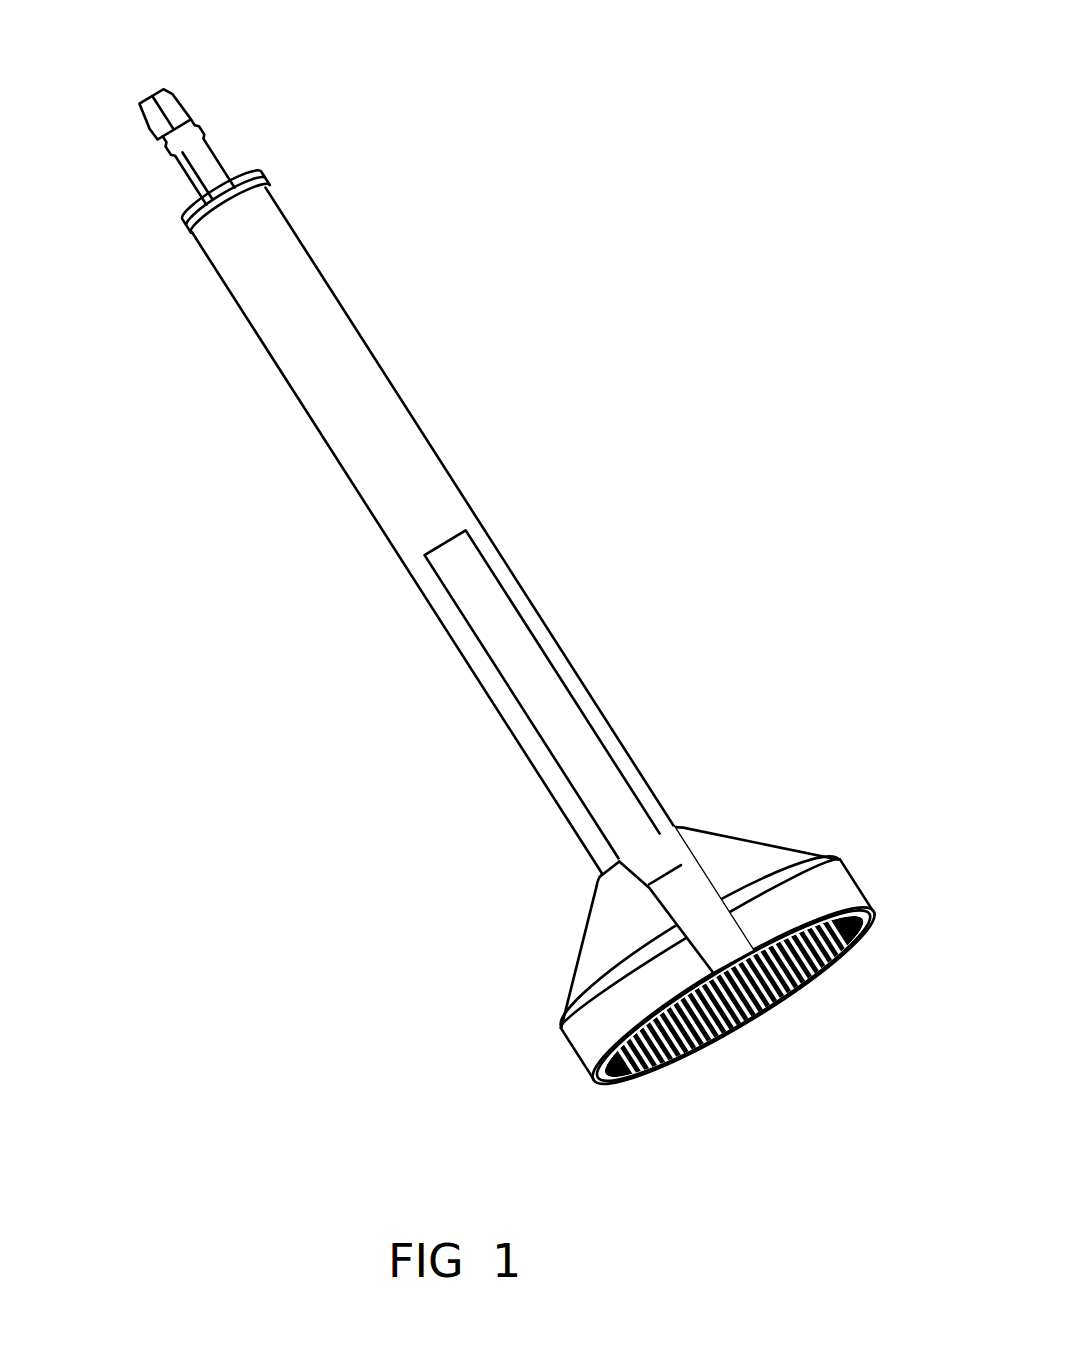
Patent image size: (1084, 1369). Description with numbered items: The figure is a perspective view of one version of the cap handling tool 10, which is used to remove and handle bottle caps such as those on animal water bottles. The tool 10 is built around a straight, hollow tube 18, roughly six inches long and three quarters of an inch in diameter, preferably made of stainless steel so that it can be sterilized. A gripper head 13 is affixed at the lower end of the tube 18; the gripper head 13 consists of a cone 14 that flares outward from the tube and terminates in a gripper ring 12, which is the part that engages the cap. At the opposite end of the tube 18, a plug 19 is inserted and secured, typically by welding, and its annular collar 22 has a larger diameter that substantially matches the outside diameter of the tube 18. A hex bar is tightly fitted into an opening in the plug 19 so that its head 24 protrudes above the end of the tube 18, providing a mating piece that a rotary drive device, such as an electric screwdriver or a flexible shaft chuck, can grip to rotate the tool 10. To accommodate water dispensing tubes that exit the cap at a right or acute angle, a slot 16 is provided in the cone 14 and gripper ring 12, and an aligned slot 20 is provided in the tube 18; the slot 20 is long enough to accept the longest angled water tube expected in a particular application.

The cap handling tool 10 is at (416, 280).
The gripper ring 12 is at (718, 971).
The gripper head 13 is at (695, 935).
The cone 14 is at (670, 896).
The slot 16 is at (685, 904).
The tube 18 is at (473, 592).
The plug 19 is at (204, 167).
The slot 20 is at (544, 696).
The collar 22 is at (228, 204).
The head 24 is at (163, 113).